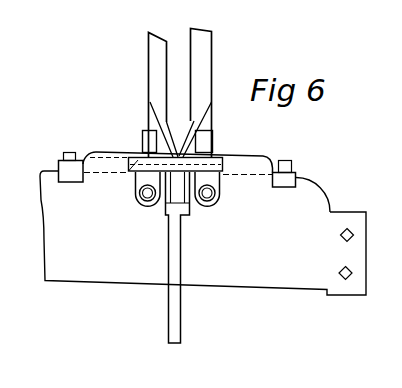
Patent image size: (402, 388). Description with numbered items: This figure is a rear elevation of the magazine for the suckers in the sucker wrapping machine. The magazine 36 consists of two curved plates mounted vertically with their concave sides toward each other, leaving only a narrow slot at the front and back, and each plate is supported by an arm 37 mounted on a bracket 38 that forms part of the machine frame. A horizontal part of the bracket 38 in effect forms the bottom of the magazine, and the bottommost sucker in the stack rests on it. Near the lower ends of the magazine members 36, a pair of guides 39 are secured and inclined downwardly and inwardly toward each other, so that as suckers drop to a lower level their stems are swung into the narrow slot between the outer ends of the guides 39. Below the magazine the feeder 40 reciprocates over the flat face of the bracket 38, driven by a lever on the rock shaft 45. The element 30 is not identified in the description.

The block 30 is at (142, 137).
The magazine 36 is at (191, 67).
The arm 37 is at (98, 151).
The bracket 38 is at (41, 217).
The guides 39 is at (213, 138).
The sucker feeder plate 40 is at (141, 197).
The rock shaft 45 is at (164, 229).